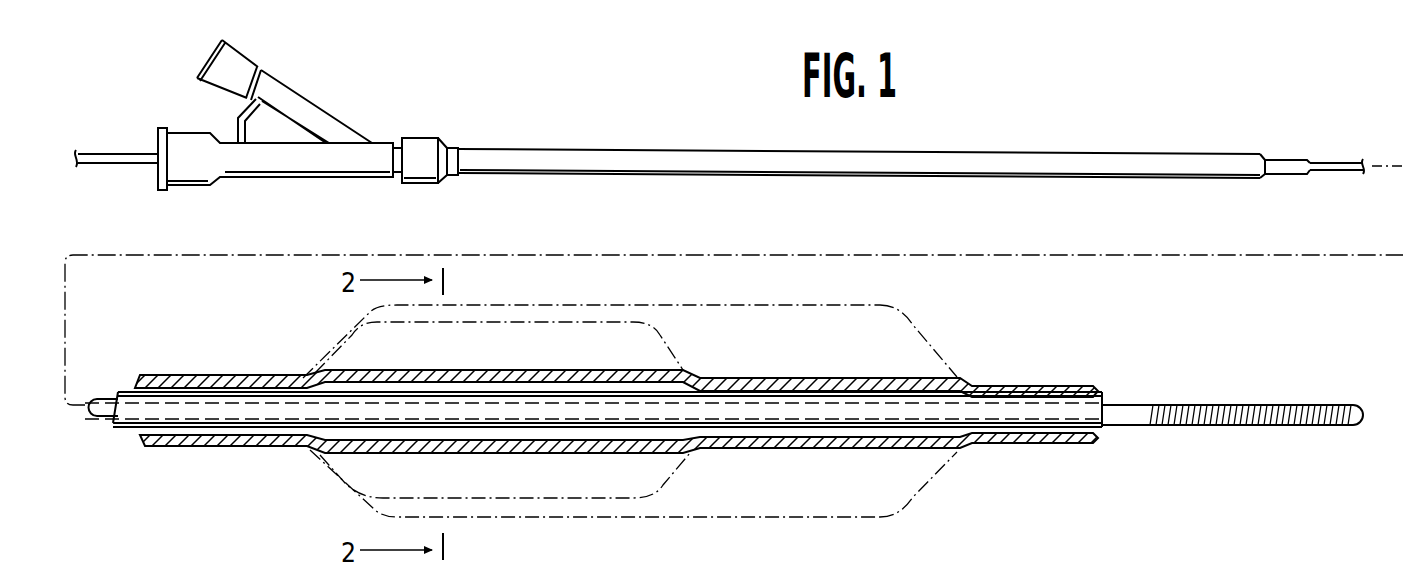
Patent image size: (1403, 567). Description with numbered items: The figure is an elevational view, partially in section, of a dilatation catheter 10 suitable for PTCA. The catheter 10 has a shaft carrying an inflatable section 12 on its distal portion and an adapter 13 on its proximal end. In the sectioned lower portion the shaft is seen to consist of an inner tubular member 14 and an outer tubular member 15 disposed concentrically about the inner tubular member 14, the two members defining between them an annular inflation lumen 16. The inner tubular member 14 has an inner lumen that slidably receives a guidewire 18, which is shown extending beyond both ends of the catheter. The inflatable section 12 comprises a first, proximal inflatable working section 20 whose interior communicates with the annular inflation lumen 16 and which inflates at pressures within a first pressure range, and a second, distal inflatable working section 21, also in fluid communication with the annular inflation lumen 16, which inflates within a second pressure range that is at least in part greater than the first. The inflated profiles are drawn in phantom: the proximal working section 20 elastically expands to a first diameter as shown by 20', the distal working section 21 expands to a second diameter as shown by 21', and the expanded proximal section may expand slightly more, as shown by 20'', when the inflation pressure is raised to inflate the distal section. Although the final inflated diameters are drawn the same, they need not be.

The dilatation catheter 10 is at (1123, 137).
The inflatable section 12 is at (731, 365).
The adapter 13 is at (373, 157).
The inner tubular member 14 is at (1280, 163).
The outer tubular member 15 is at (263, 438).
The annular inflation lumen 16 is at (200, 387).
The guidewire 18 is at (122, 155).
The first inflatable working section 20 is at (502, 442).
The expanded proximal working section 20' is at (591, 322).
The further expanded proximal working section 20'' is at (595, 508).
The second inflatable working section 21 is at (830, 392).
The expanded distal working section 21' is at (877, 432).